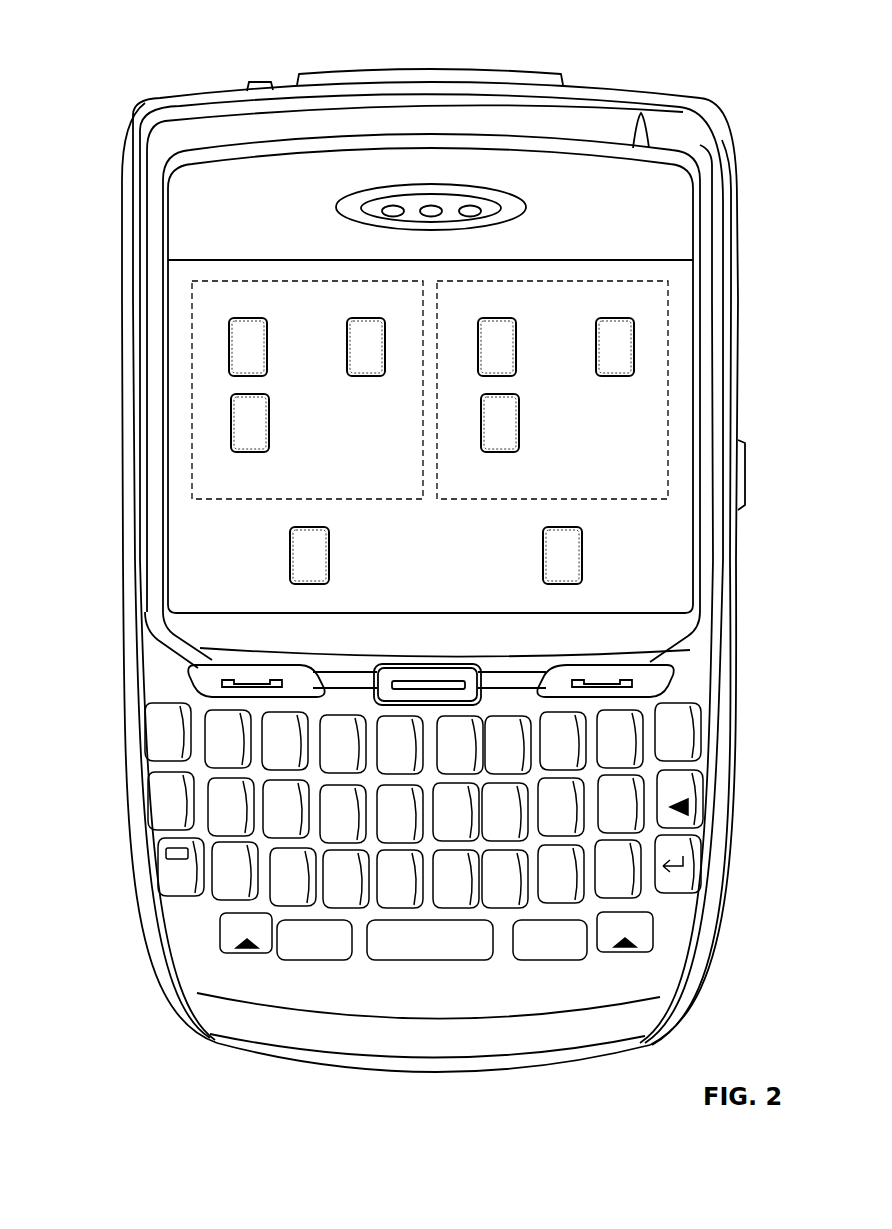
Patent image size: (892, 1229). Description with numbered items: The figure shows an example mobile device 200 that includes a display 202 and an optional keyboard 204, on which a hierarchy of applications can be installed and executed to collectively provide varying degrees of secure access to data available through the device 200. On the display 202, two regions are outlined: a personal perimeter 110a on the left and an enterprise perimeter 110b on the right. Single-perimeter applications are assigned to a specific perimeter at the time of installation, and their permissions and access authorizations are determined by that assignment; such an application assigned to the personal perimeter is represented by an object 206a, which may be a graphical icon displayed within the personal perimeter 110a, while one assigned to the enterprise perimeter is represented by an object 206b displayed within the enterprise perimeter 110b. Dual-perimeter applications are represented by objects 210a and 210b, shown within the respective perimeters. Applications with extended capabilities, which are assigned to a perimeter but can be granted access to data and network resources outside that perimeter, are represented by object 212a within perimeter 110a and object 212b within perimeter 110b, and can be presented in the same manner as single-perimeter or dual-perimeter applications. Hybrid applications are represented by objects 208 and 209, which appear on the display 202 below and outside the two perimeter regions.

The mobile device 200 is at (205, 44).
The display 202 is at (687, 415).
The keyboard 204 is at (146, 728).
The personal perimeter 110a is at (190, 300).
The enterprise perimeter 110b is at (670, 357).
The object 206a is at (256, 374).
The object 206b is at (508, 374).
The object 210a is at (252, 452).
The object 210b is at (502, 452).
The object 212a is at (366, 319).
The object 212b is at (612, 319).
The object 208 is at (329, 557).
The object 209 is at (582, 557).